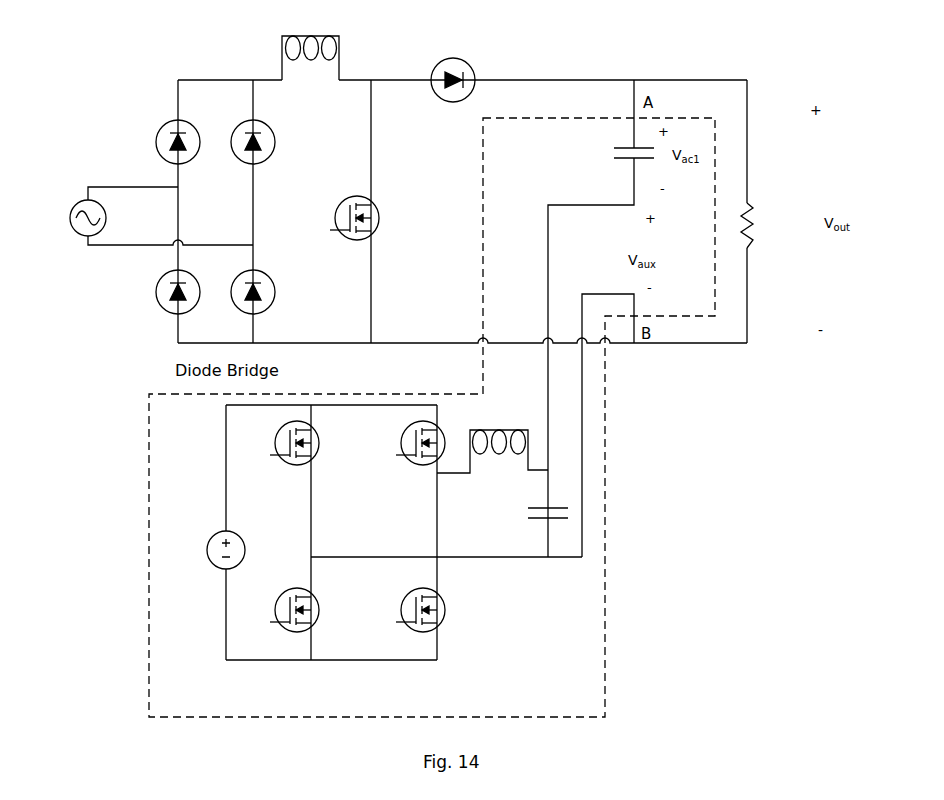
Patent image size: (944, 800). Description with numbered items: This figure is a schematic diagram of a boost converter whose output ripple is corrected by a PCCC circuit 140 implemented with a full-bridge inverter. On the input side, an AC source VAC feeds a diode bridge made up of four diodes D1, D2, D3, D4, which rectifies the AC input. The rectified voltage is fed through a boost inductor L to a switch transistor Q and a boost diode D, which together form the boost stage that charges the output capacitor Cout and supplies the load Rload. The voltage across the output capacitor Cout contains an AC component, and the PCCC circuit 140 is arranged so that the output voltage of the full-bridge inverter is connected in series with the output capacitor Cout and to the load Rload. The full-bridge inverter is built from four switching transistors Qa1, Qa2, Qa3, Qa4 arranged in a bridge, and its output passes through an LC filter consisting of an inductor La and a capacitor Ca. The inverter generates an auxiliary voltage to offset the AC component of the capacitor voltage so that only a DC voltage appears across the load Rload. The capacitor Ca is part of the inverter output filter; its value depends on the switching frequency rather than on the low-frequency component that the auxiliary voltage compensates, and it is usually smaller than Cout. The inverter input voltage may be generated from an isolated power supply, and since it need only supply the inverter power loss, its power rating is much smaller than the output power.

The PCCC circuit 140 is at (432, 417).
The inductor L is at (310, 46).
The diode D is at (453, 71).
The switch transistor Q is at (362, 210).
The bridge diode D1 is at (183, 137).
The bridge diode D2 is at (258, 137).
The bridge diode D3 is at (258, 287).
The bridge diode D4 is at (183, 287).
The output capacitor Cout is at (615, 156).
The load Rload is at (767, 225).
The AC voltage source VAC is at (72, 218).
The inverter transistor Qa1 is at (306, 440).
The inverter transistor Qa2 is at (306, 605).
The inverter transistor Qa3 is at (432, 440).
The inverter transistor Qa4 is at (432, 605).
The auxiliary inductor La is at (492, 437).
The capacitor Ca is at (535, 513).